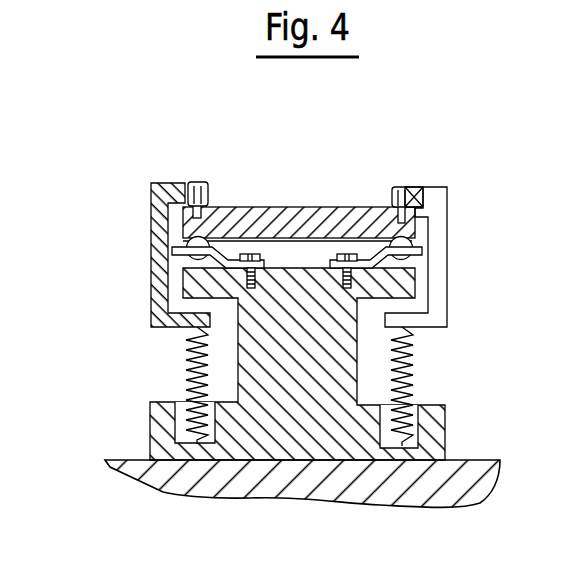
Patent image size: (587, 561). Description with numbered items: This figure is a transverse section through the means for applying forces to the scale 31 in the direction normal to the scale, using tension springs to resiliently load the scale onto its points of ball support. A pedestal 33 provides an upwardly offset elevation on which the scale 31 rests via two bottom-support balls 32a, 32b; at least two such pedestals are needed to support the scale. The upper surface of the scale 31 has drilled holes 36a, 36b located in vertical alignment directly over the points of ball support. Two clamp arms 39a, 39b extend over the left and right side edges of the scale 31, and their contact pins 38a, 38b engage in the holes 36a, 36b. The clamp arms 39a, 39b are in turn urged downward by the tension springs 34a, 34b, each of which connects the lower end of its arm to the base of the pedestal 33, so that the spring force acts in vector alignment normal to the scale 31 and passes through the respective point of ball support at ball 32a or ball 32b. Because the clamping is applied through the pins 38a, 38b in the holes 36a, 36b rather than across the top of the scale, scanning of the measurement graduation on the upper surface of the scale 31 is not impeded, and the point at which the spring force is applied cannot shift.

The scale 31 is at (303, 222).
The bottom-support ball 32a is at (174, 255).
The bottom-support ball 32b is at (418, 266).
The pedestal 33 is at (335, 452).
The tension spring 34a is at (188, 368).
The tension spring 34b is at (412, 356).
The drilled hole 36a is at (182, 220).
The drilled hole 36b is at (410, 232).
The contact pin 38a is at (190, 182).
The contact pin 38b is at (422, 187).
The clamp arm 39a is at (157, 290).
The clamp arm 39b is at (443, 195).